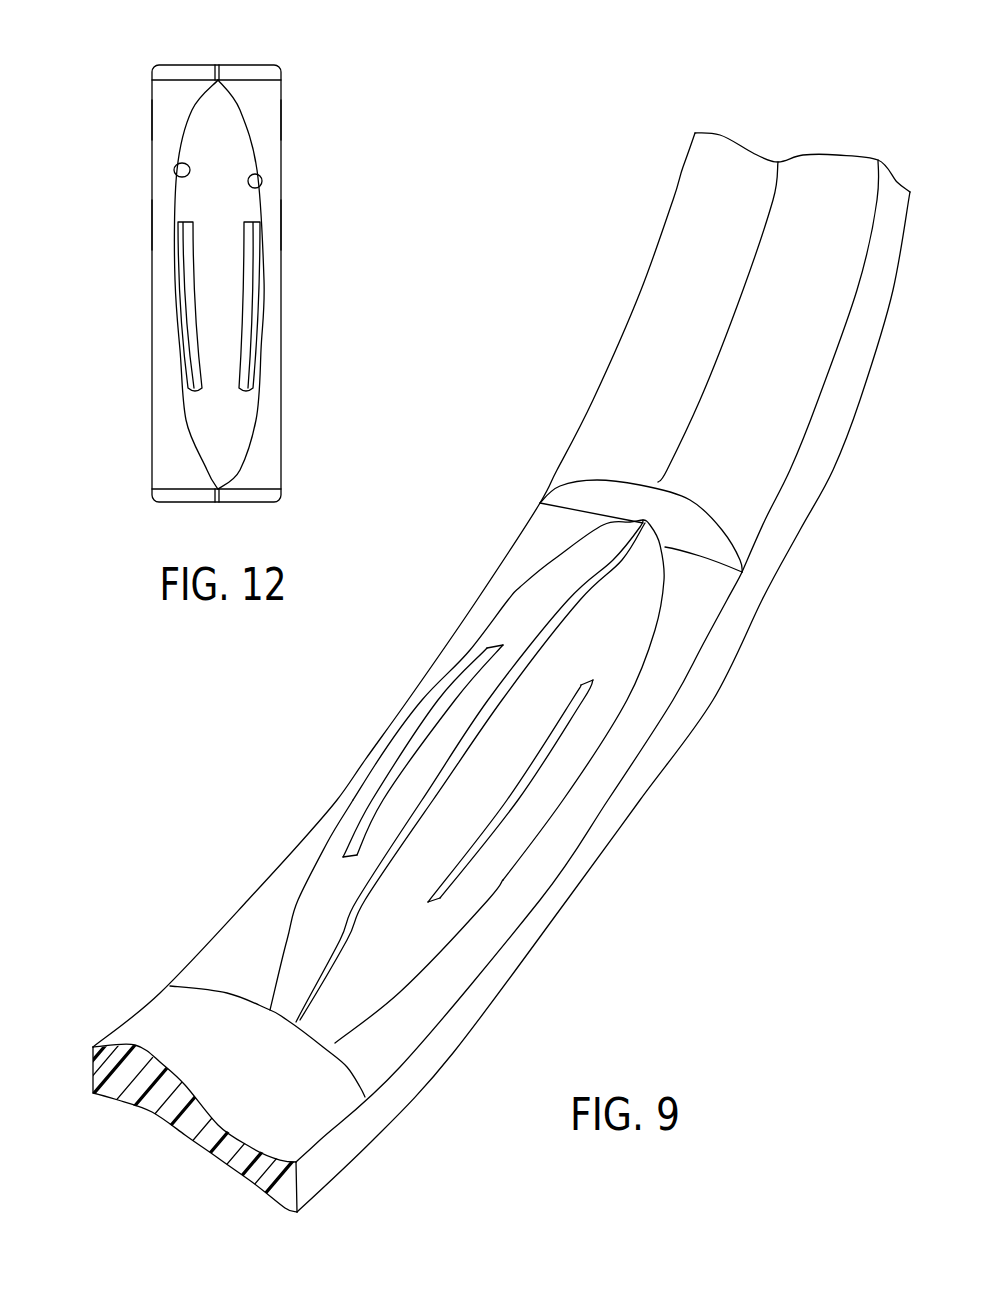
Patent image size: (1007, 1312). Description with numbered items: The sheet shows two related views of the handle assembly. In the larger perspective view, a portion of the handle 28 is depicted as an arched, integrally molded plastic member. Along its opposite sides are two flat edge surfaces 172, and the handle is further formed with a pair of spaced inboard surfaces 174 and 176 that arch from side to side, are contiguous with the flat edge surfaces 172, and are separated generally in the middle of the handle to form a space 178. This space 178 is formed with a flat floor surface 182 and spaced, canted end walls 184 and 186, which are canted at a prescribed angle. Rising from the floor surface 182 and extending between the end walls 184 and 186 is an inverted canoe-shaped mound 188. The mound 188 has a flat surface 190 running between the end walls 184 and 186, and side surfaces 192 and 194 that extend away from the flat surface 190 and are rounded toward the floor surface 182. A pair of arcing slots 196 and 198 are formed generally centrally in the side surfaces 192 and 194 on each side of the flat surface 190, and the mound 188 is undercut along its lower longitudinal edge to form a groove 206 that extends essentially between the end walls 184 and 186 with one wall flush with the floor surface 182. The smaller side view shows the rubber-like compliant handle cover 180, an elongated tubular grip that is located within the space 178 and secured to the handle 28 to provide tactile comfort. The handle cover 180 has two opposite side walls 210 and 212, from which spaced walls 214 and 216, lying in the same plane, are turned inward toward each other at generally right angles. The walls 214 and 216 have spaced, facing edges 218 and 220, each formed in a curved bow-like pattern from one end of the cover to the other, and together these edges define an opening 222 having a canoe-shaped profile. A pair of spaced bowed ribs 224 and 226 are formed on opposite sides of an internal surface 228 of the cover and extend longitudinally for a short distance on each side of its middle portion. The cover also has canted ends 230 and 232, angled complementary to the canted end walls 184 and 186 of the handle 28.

In FIG. 9, the handle 28 is at (683, 167).
In FIG. 9, the flat edge surfaces 172 is at (692, 690).
In FIG. 9, the inboard surface 174 is at (690, 252).
In FIG. 9, the inboard surface 176 is at (187, 1030).
In FIG. 9, the space 178 is at (535, 555).
In FIG. 9, the flat floor surface 182 is at (702, 587).
In FIG. 9, the end wall 184 is at (720, 548).
In FIG. 9, the end wall 186 is at (340, 1063).
In FIG. 9, the inverted canoe-shaped mound 188 is at (505, 600).
In FIG. 9, the flat surface 190 is at (347, 927).
In FIG. 9, the side surface 192 is at (305, 915).
In FIG. 9, the side surface 194 is at (400, 993).
In FIG. 9, the arcing slot 196 is at (418, 735).
In FIG. 9, the arcing slot 198 is at (520, 793).
In FIG. 9, the groove 206 is at (513, 882).
In FIG. 12, the handle cover 180 is at (287, 107).
In FIG. 12, the side wall 210 is at (152, 225).
In FIG. 12, the side wall 212 is at (285, 227).
In FIG. 12, the wall 214 is at (163, 127).
In FIG. 12, the wall 216 is at (273, 127).
In FIG. 12, the facing edge 218 is at (178, 165).
In FIG. 12, the facing edge 220 is at (257, 173).
In FIG. 12, the opening 222 is at (212, 120).
In FIG. 12, the bowed rib 224 is at (187, 295).
In FIG. 12, the bowed rib 226 is at (253, 315).
In FIG. 12, the internal surface 228 is at (213, 413).
In FIG. 12, the canted end 230 is at (173, 72).
In FIG. 12, the canted end 232 is at (193, 497).